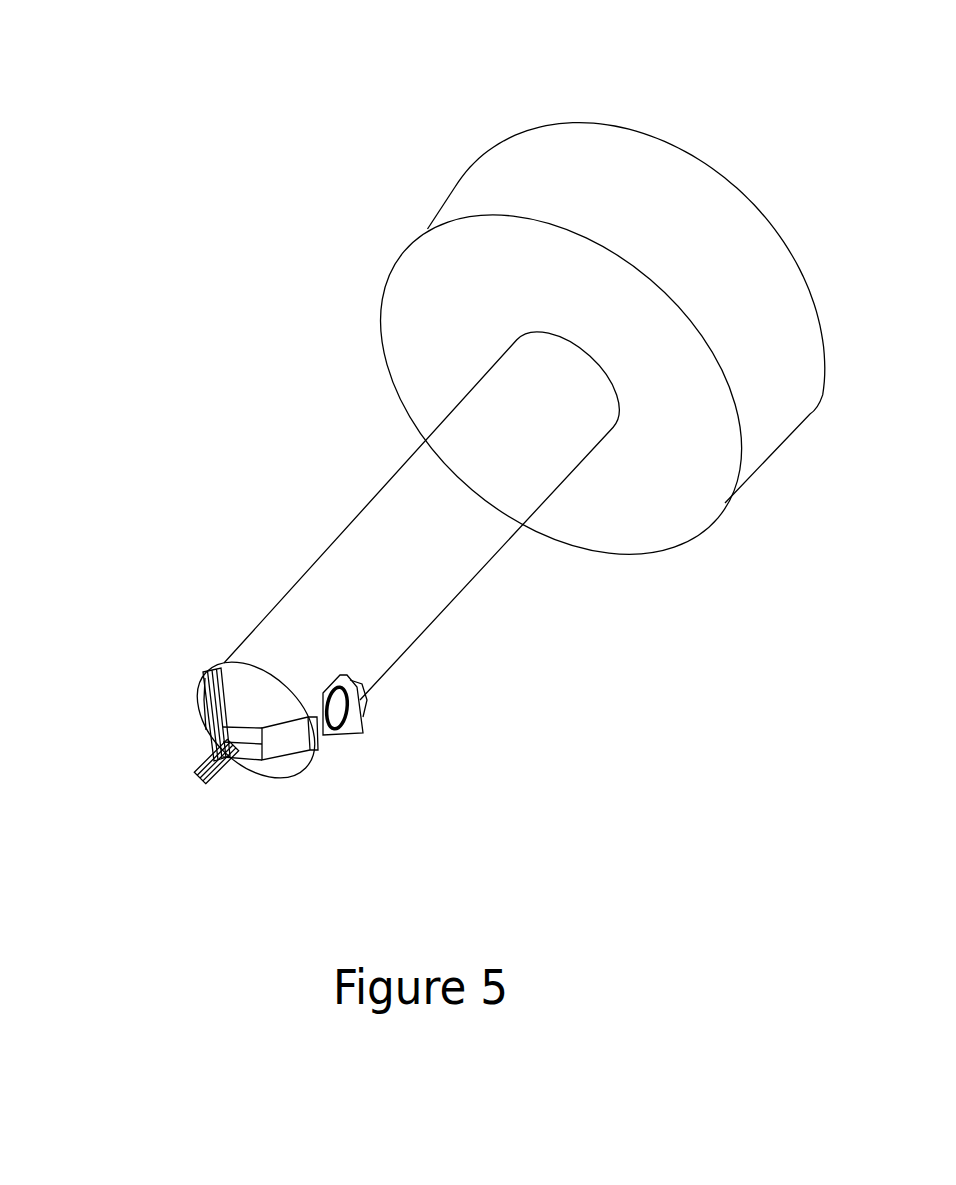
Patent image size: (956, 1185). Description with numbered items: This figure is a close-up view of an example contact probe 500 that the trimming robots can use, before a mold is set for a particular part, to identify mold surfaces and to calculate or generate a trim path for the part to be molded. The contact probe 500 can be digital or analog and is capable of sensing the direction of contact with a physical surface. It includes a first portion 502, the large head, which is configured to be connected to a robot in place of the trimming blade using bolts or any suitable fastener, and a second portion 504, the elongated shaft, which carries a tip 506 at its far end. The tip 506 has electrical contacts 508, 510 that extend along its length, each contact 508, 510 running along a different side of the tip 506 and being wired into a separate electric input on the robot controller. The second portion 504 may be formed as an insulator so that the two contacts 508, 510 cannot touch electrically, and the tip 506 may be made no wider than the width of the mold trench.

The contact probe 500 is at (420, 124).
The first portion 502 is at (463, 193).
The second portion 504 is at (255, 606).
The tip 506 is at (232, 785).
The electrical contact 508 is at (325, 765).
The electrical contact 510 is at (197, 703).